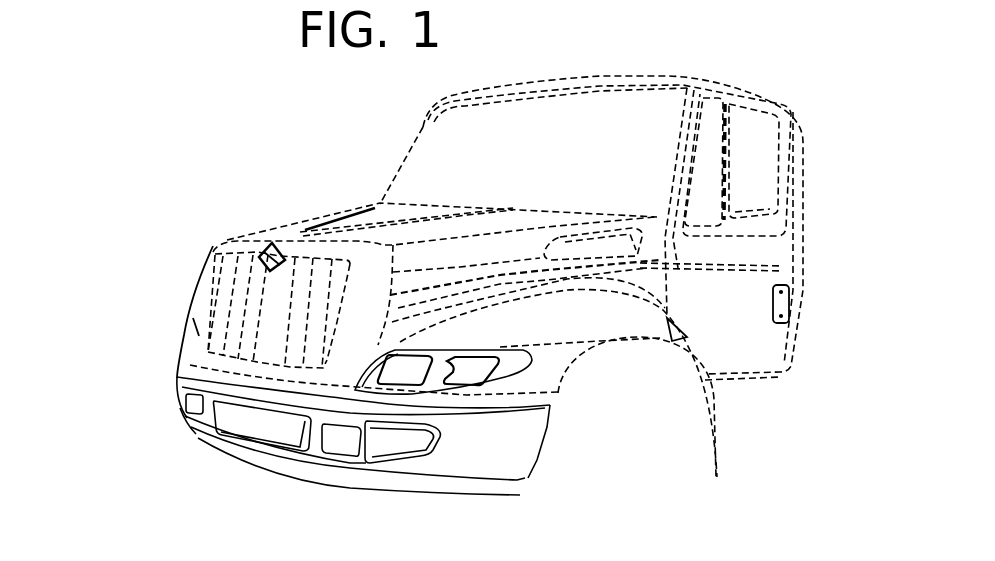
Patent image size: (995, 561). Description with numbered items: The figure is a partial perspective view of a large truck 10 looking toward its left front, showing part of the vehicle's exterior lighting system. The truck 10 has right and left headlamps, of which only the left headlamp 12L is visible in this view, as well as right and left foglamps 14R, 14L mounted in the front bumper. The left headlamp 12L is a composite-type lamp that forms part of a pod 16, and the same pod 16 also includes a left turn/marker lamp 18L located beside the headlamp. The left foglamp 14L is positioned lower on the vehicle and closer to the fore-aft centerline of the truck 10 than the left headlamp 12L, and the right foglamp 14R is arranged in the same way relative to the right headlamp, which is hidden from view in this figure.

The truck 10 is at (818, 160).
The left headlamp 12L is at (413, 369).
The left foglamp 14L is at (340, 447).
The right foglamp 14R is at (187, 402).
The pod 16 is at (530, 364).
The left turn/marker lamp 18L is at (463, 370).